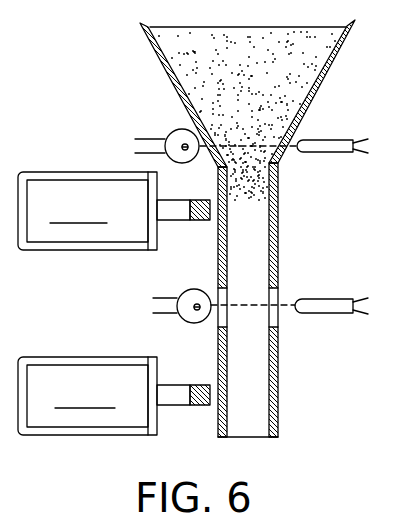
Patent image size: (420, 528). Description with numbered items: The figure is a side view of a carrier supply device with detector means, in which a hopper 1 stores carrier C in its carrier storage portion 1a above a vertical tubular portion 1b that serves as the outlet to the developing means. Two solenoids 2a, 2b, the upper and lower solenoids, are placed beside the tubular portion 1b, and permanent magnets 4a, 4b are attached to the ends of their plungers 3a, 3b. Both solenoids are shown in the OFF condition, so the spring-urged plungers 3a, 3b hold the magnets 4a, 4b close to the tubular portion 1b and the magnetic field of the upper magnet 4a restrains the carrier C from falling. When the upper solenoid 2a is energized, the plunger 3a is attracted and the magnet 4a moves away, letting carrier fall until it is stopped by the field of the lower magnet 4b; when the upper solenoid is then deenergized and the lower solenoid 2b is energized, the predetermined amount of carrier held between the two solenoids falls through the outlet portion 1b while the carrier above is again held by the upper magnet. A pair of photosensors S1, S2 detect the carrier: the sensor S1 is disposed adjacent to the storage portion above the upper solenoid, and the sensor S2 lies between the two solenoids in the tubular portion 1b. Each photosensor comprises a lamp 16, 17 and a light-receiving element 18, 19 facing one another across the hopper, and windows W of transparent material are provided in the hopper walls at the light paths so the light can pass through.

The hopper 1 is at (164, 77).
The carrier storage portion 1a is at (334, 60).
The vertical tubular portion 1b is at (279, 241).
The carrier C is at (294, 88).
The windows W is at (204, 144).
The lamp 16 is at (174, 132).
The lamp 17 is at (181, 292).
The light-receiving element 18 is at (337, 139).
The light-receiving element 19 is at (338, 298).
The photosensor S1 is at (338, 157).
The photosensor S2 is at (331, 317).
The solenoid 2a is at (70, 172).
The solenoid 2b is at (62, 357).
The plunger 3a is at (172, 207).
The plunger 3b is at (171, 392).
The permanent magnet 4a is at (200, 220).
The permanent magnet 4b is at (200, 405).